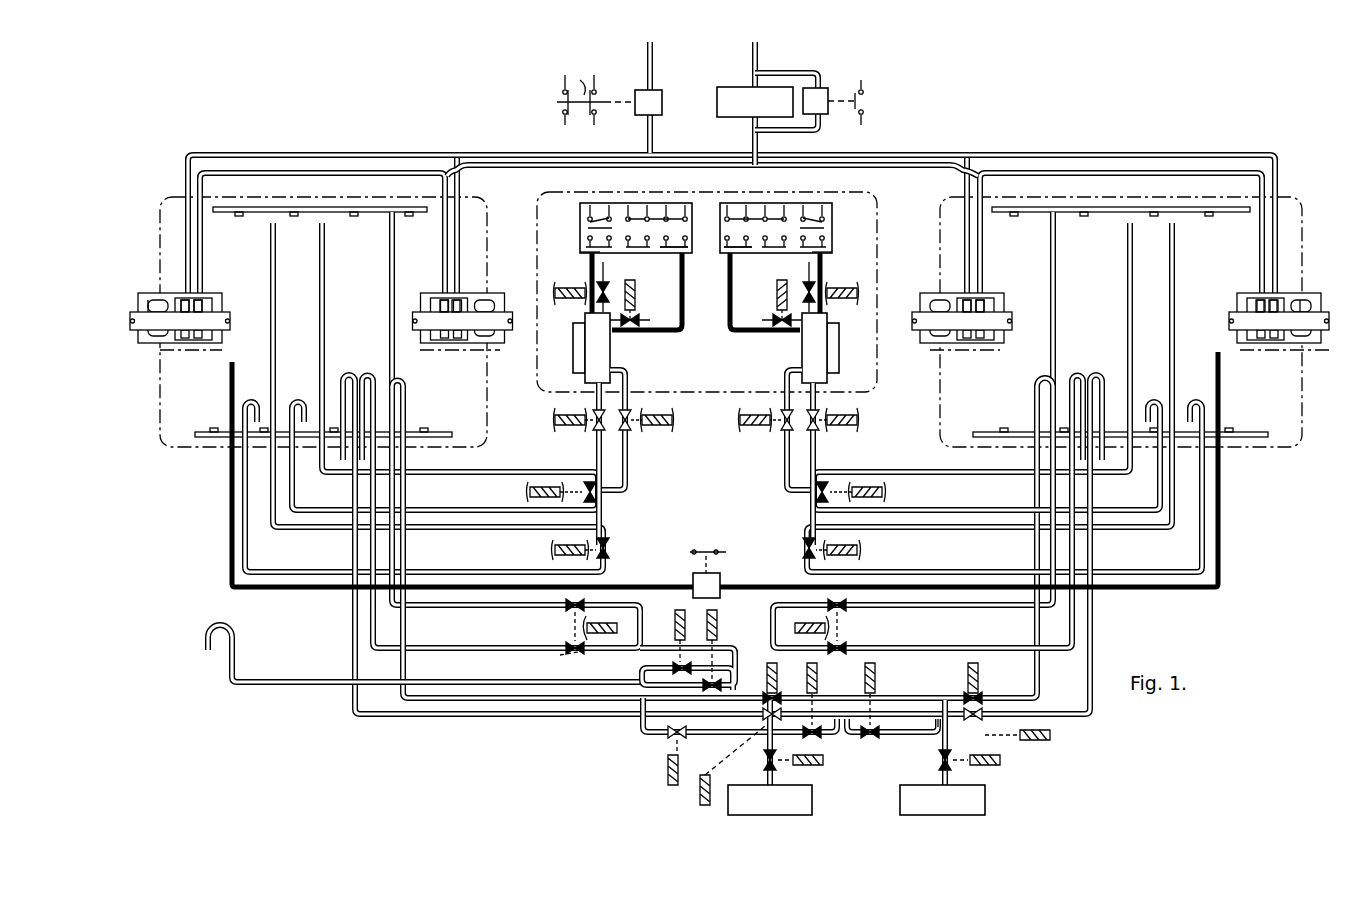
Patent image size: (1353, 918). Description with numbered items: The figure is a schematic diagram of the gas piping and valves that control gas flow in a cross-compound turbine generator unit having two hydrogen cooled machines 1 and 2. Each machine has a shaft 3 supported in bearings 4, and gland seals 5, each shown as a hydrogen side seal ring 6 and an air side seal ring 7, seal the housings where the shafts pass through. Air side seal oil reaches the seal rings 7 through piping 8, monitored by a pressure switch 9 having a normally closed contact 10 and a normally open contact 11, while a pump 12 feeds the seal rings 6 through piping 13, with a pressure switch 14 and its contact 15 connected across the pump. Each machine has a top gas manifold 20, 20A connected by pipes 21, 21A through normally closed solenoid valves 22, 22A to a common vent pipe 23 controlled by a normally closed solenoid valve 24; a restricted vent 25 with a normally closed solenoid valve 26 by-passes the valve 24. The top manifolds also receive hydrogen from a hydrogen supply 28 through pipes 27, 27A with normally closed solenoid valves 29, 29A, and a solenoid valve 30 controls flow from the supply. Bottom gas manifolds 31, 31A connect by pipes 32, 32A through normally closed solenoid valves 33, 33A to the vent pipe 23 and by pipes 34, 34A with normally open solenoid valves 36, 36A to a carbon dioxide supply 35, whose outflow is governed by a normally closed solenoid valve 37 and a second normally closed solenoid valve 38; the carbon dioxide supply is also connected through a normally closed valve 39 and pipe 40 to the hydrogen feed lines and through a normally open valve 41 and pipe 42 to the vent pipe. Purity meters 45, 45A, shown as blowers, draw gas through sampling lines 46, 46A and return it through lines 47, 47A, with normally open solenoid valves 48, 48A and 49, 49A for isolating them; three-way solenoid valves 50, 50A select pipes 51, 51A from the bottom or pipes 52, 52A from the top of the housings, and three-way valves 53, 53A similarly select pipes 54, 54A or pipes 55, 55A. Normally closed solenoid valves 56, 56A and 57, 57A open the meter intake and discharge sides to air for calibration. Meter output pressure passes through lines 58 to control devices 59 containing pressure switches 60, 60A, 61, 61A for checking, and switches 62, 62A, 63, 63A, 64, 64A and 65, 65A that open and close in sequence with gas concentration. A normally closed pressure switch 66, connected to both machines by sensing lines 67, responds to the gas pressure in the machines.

The machine 1 is at (487, 204).
The machine 2 is at (940, 200).
The shaft 3 is at (222, 305).
The bearings 4 is at (152, 300).
The gland seals 5 is at (222, 343).
The hydrogen side seal ring 6 is at (203, 298).
The air side seal ring 7 is at (185, 298).
The piping 8 is at (654, 80).
The pressure switch 9 is at (636, 92).
The normally closed contact 10 is at (562, 92).
The normally open contact 11 is at (578, 78).
The pump 12 is at (722, 92).
The piping 13 is at (527, 172).
The pressure switch 14 is at (822, 90).
The contact 15 is at (860, 102).
The top gas manifold 20 is at (372, 212).
The top gas manifold 20A is at (1045, 212).
The pipe 21 is at (380, 375).
The pipe 21A is at (1060, 378).
The normally closed solenoid valve 22 is at (545, 628).
The normally closed solenoid valve 22A is at (800, 618).
The common vent pipe 23 is at (470, 682).
The normally closed solenoid valve 24 is at (722, 686).
The restricted vent 25 is at (642, 672).
The normally closed solenoid valve 26 is at (682, 662).
The hydrogen supply pipe 27 is at (408, 462).
The hydrogen supply pipe 27A is at (1040, 683).
The hydrogen supply 28 is at (900, 785).
The normally closed solenoid valve 29 is at (780, 685).
The normally closed solenoid valve 29A is at (967, 696).
The solenoid valve 30 is at (952, 766).
The bottom gas manifold 31 is at (412, 435).
The bottom gas manifold 31A is at (1000, 432).
The pipe 32 is at (370, 380).
The pipe 32A is at (1100, 372).
The normally closed solenoid valve 33 is at (592, 650).
The normally closed solenoid valve 33A is at (812, 670).
The pipe 34 is at (350, 510).
The pipe 34A is at (1092, 494).
The carbon dioxide supply 35 is at (812, 792).
The normally open solenoid valve 36 is at (735, 740).
The normally open solenoid valve 36A is at (980, 722).
The normally closed solenoid valve 37 is at (765, 764).
The normally closed solenoid valve 38 is at (820, 738).
The normally closed valve 39 is at (868, 740).
The pipe 40 is at (936, 736).
The normally open valve 41 is at (668, 738).
The pipe 42 is at (650, 725).
The purity meter 45 is at (610, 351).
The purity meter 45A is at (802, 351).
The sampling line 46 is at (632, 458).
The sampling line 46A is at (782, 458).
The return sampling line 47 is at (596, 455).
The return sampling line 47A is at (816, 455).
The normally open solenoid valve 48 is at (560, 430).
The normally open solenoid valve 48A is at (850, 430).
The normally open solenoid valve 49 is at (650, 432).
The normally open solenoid valve 49A is at (762, 432).
The three-way solenoid valve 50 is at (554, 552).
The three-way solenoid valve 50A is at (858, 552).
The pipe 51 is at (480, 572).
The pipe 51A is at (1016, 572).
The pipe 52 is at (492, 527).
The pipe 52A is at (956, 527).
The three-way valve 53 is at (532, 496).
The three-way valve 53A is at (884, 496).
The pipe 54 is at (472, 510).
The pipe 54A is at (1010, 510).
The pipe 55 is at (498, 472).
The pipe 55A is at (948, 472).
The normally closed solenoid valve 56 is at (638, 290).
The normally closed solenoid valve 56A is at (776, 292).
The normally closed solenoid valve 57 is at (570, 282).
The normally closed solenoid valve 57A is at (842, 280).
The lines 58 is at (672, 290).
The control device 59 is at (695, 250).
The pressure switch 60 is at (644, 208).
The pressure switch 60A is at (764, 208).
The pressure switch 61 is at (682, 208).
The pressure switch 61A is at (740, 192).
The pressure switch 62 is at (590, 210).
The pressure switch 62A is at (824, 208).
The pressure switch 63 is at (580, 252).
The pressure switch 63A is at (820, 252).
The pressure switch 64 is at (612, 281).
The pressure switch 64A is at (804, 281).
The pressure switch 65 is at (675, 250).
The pressure switch 65A is at (740, 250).
The pressure switch 66 is at (700, 564).
The sensing lines 67 is at (230, 543).